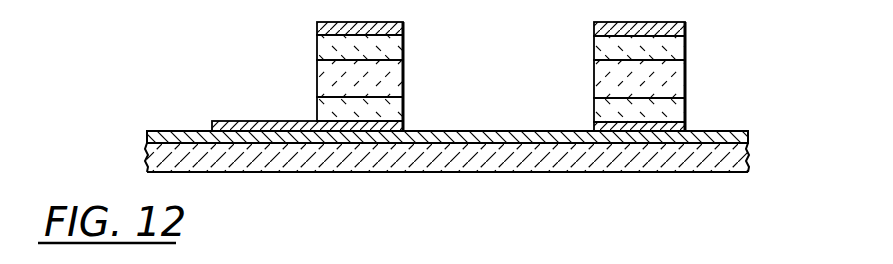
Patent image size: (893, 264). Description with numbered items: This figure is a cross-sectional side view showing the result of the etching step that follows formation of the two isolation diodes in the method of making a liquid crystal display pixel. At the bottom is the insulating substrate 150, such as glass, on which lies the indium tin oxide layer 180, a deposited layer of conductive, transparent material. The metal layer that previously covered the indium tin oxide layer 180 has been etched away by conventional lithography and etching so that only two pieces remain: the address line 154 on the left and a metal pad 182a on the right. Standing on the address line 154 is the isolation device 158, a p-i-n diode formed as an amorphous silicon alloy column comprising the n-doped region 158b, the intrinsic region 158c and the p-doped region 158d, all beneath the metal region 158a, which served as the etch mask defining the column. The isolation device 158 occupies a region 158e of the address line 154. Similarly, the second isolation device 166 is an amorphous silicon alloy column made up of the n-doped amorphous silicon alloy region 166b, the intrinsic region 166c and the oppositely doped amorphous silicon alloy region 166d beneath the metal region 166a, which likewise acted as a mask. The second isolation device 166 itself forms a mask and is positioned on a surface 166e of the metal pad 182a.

The insulating substrate 150 is at (730, 162).
The indium tin oxide layer 180 is at (743, 138).
The first address line 154 is at (214, 128).
The metal pad 182a is at (670, 127).
The isolation device 158 is at (349, 74).
The metal region 158a is at (400, 30).
The n-doped region 158b is at (397, 54).
The intrinsic region 158c is at (397, 79).
The p-doped region 158d is at (326, 106).
The region of the address line 158e is at (393, 112).
The second isolation device 166 is at (649, 74).
The metal region 166a is at (680, 30).
The n-doped amorphous silicon alloy region 166b is at (678, 54).
The intrinsic region 166c is at (675, 78).
The oppositely doped amorphous silicon alloy region 166d is at (603, 112).
The surface of the metal pad 166e is at (680, 110).